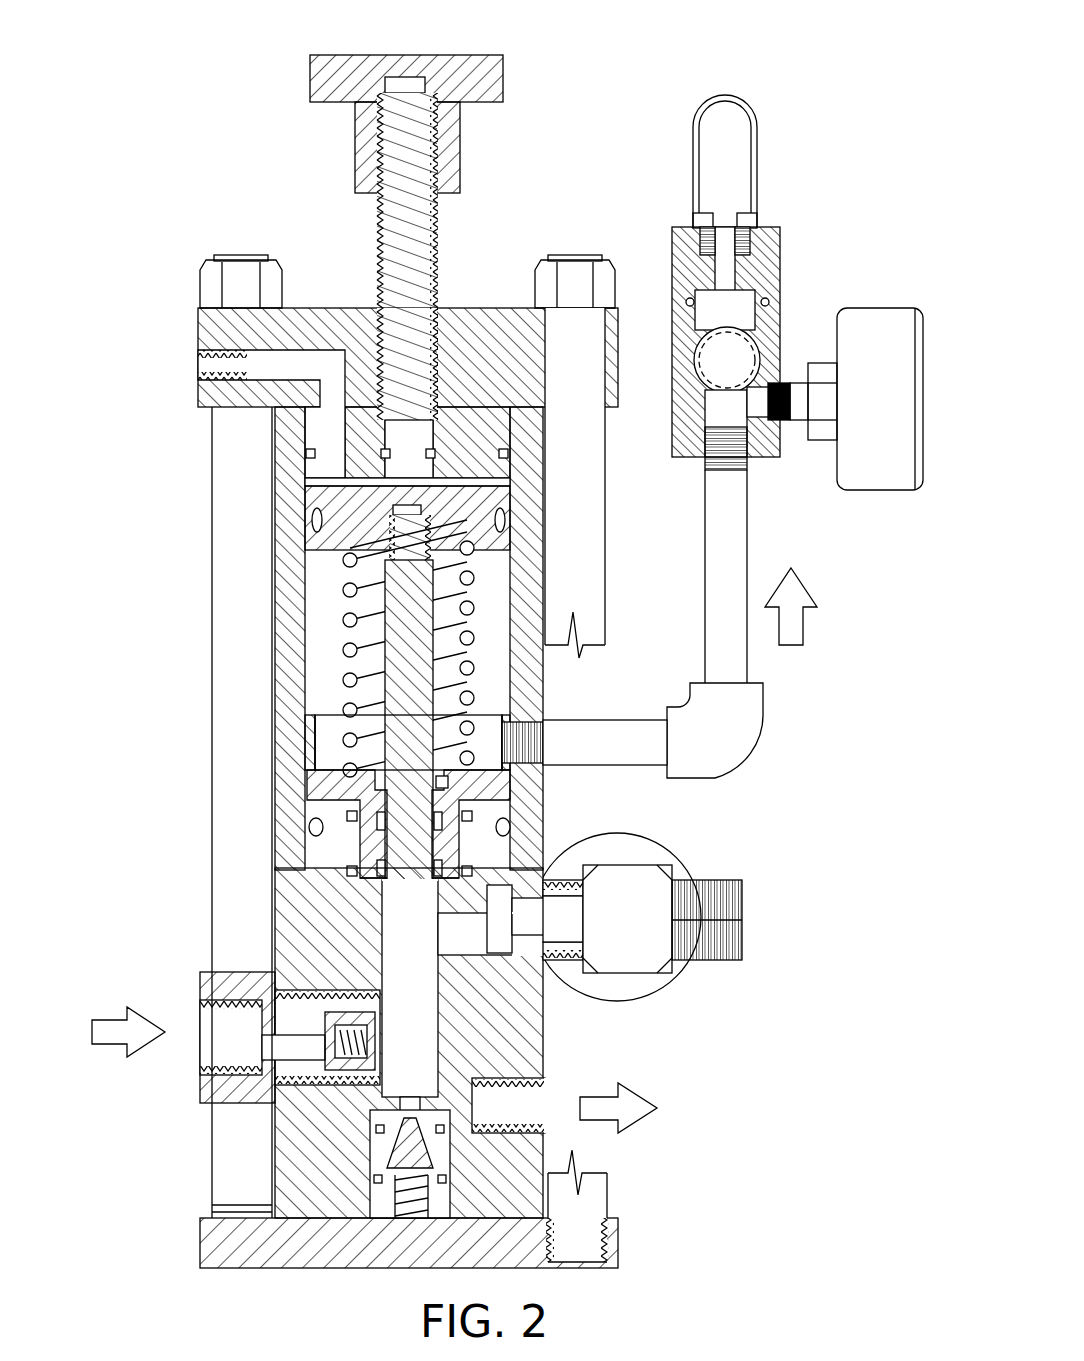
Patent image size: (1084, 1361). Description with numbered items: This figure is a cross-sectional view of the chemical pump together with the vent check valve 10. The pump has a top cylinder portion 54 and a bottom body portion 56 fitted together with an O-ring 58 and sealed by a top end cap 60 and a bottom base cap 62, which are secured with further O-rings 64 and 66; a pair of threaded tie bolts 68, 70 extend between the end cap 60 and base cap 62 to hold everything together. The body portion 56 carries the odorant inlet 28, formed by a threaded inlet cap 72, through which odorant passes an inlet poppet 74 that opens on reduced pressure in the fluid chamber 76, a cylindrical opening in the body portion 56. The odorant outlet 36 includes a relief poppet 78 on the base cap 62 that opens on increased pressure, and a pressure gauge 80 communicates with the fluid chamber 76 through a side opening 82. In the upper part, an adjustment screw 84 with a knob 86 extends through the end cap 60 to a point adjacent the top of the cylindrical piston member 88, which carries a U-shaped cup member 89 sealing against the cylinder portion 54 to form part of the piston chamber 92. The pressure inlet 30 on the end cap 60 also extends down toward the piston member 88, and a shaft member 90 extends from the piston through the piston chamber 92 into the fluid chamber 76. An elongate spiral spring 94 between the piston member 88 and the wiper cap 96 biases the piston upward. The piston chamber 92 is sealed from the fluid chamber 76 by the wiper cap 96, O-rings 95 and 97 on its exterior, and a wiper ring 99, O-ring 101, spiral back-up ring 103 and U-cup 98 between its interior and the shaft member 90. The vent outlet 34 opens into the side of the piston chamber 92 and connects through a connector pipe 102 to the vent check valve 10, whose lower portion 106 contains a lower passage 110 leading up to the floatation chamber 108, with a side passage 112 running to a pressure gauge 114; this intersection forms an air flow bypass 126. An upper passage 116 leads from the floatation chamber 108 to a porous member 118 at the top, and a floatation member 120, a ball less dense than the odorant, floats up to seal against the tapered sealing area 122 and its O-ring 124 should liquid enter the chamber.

The vent check valve 10 is at (798, 148).
The odorant inlet 28 is at (223, 1042).
The pressure inlet 30 is at (218, 366).
The vent outlet 34 is at (525, 725).
The odorant outlet 36 is at (510, 1133).
The top cylinder portion 54 is at (290, 563).
The bottom body portion 56 is at (345, 930).
The O-ring 58 is at (510, 828).
The top end cap 60 is at (320, 325).
The bottom base cap 62 is at (225, 1245).
The O-ring 64 is at (308, 454).
The O-ring 66 is at (378, 1180).
The threaded tie bolt 68 is at (240, 698).
The threaded tie bolt 70 is at (590, 1195).
The threaded inlet cap 72 is at (205, 1090).
The inlet poppet 74 is at (368, 1012).
The fluid chamber 76 is at (410, 997).
The relief poppet 78 is at (398, 1215).
The pressure gauge 80 is at (632, 988).
The side opening 82 is at (545, 972).
The adjustment screw 84 is at (412, 222).
The knob 86 is at (333, 78).
The cylindrical piston member 88 is at (360, 497).
The U-shaped cup member 89 is at (505, 522).
The shaft member 90 is at (400, 598).
The piston chamber 92 is at (409, 646).
The elongate spiral spring 94 is at (470, 618).
The O-ring 95 is at (472, 817).
The wiper cap 96 is at (320, 745).
The O-ring 97 is at (490, 885).
The U-cup 98 is at (362, 903).
The wiper ring 99 is at (448, 783).
The O-ring 101 is at (360, 822).
The connector pipe 102 is at (640, 738).
The spiral back-up ring 103 is at (307, 790).
The lower portion 106 is at (757, 447).
The floatation chamber 108 is at (720, 315).
The lower passage 110 is at (723, 413).
The side passage 112 is at (760, 405).
The pressure gauge 114 is at (887, 458).
The upper passage 116 is at (725, 270).
The porous member 118 is at (728, 97).
The floatation member 120 is at (712, 372).
The sealing area 122 is at (768, 306).
The O-ring 124 is at (688, 300).
The air flow bypass 126 is at (772, 370).